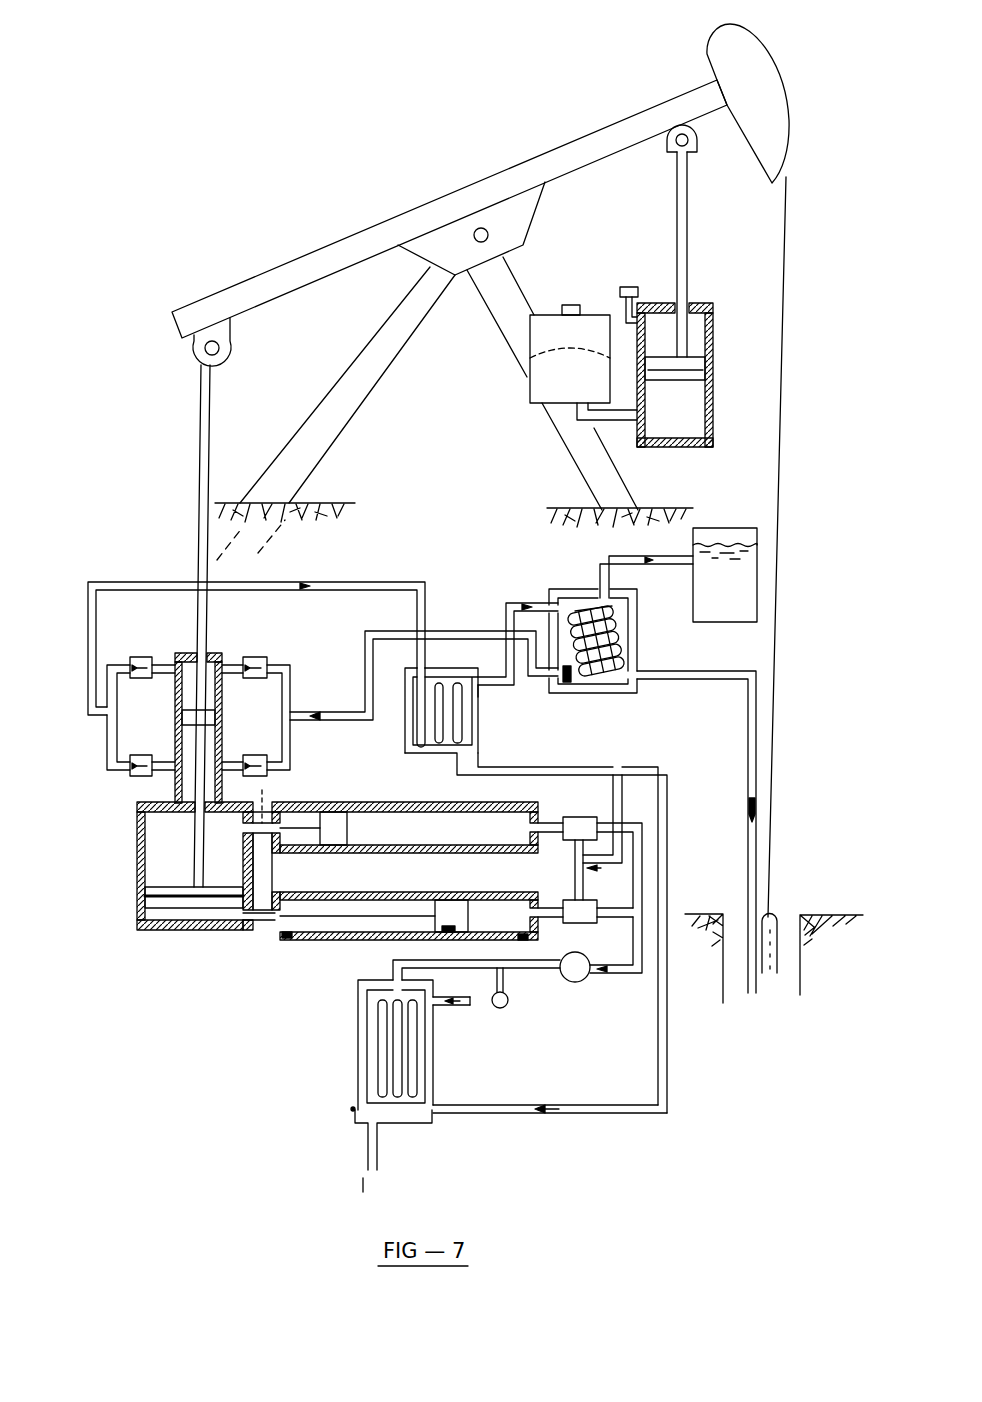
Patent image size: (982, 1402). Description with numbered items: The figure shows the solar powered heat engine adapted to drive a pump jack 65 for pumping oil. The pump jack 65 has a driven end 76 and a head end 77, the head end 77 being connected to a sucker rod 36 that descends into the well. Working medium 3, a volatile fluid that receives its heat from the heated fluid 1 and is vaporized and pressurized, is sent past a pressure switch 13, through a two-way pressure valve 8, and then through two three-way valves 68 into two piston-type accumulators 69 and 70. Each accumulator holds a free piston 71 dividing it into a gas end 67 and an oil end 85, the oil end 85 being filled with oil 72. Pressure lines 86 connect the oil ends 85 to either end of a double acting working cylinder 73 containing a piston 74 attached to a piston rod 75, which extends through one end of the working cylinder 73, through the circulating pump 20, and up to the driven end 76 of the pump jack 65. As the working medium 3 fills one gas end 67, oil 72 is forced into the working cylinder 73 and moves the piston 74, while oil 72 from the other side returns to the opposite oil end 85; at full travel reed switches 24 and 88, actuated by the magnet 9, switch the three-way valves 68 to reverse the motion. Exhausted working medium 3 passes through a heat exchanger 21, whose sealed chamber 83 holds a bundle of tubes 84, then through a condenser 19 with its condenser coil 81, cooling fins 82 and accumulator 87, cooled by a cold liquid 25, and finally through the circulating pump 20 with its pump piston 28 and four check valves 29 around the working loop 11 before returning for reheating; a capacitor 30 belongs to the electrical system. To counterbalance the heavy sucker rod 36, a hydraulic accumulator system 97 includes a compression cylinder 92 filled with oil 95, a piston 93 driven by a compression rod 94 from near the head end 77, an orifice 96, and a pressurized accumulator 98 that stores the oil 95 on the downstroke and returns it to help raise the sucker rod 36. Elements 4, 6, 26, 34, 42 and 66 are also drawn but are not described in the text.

The heated fluid 1 is at (473, 1003).
The working medium 3 is at (298, 587).
The heat exchanger 4 is at (358, 1047).
The heat exchanger coils 6 is at (415, 1117).
The two-way pressure valve 8 is at (587, 987).
The magnet 9 is at (455, 930).
The working loop 11 is at (377, 585).
The pressure switch 13 is at (508, 1006).
The condenser 19 is at (635, 697).
The circulating pump 20 is at (222, 655).
The heat exchanger 21 is at (480, 727).
The reed switch 24 is at (285, 937).
The cold liquid 25 is at (650, 547).
The reservoir 26 is at (743, 530).
The pump piston 28 is at (182, 718).
The check valve 29 is at (140, 657).
The capacitor 30 is at (640, 653).
The inlet 34 is at (350, 1110).
The sucker rod 36 is at (777, 917).
The outlet pipe 42 is at (367, 1132).
The pump jack 65 is at (507, 178).
The valve 66 is at (443, 1003).
The gas end 67 is at (395, 820).
The three-way valve 68 is at (575, 820).
The piston-type accumulator 69 is at (450, 820).
The piston-type accumulator 70 is at (486, 892).
The free piston 71 is at (337, 820).
The oil 72 is at (303, 820).
The working cylinder 73 is at (148, 930).
The piston 74 is at (143, 907).
The piston rod 75 is at (202, 420).
The driven end 76 is at (192, 312).
The head end 77 is at (762, 90).
The condenser coil 81 is at (617, 630).
The cooling fins 82 is at (607, 615).
The sealed chamber 83 is at (480, 698).
The bundle of tubes 84 is at (415, 738).
The oil end 85 is at (303, 835).
The pressure line 86 is at (247, 978).
The accumulator 87 is at (572, 682).
The reed switch 88 is at (522, 940).
The compression cylinder 92 is at (710, 395).
The piston 93 is at (687, 363).
The compression rod 94 is at (690, 228).
The oil 95 is at (680, 412).
The orifice 96 is at (637, 423).
The hydraulic accumulator system 97 is at (703, 450).
The pressurized accumulator 98 is at (547, 330).